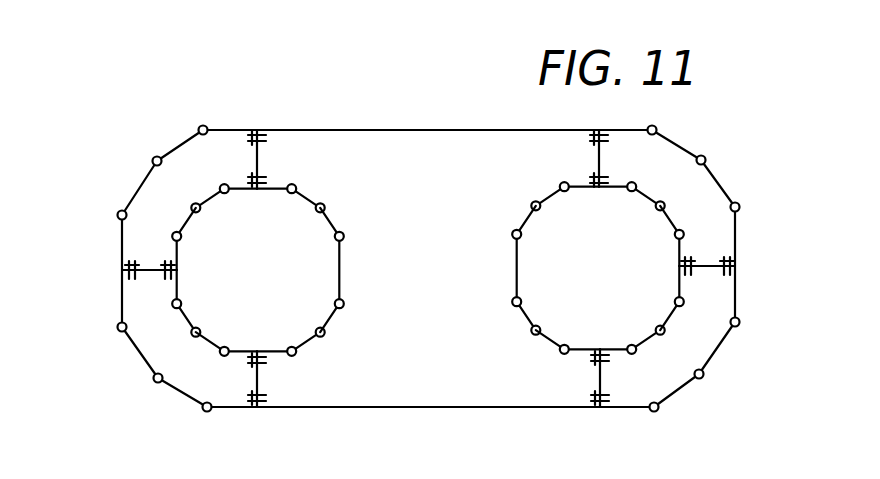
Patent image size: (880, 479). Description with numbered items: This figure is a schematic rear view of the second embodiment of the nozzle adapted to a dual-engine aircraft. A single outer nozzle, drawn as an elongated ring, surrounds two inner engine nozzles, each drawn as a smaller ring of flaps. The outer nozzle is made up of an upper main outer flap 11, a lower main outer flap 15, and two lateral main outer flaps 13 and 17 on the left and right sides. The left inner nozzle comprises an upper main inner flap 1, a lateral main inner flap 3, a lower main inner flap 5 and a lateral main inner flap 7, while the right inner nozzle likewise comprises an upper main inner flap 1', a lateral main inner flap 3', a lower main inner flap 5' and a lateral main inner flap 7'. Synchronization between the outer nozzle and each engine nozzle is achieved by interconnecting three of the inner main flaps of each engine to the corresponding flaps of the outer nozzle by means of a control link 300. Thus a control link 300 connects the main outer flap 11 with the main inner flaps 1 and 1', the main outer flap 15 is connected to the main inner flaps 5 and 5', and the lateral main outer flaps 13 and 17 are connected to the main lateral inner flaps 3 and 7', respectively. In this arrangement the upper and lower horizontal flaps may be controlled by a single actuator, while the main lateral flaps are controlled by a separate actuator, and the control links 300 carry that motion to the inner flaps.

The main inner flap 1 is at (257, 210).
The main inner flap 1' is at (597, 210).
The main lateral inner flap 3 is at (204, 272).
The main lateral inner flap 3' is at (542, 270).
The main inner flap 5 is at (260, 321).
The main inner flap 5' is at (600, 321).
The main lateral inner flap 7 is at (312, 270).
The main lateral inner flap 7' is at (651, 268).
The main outer flap 11 is at (408, 130).
The lateral main outer flap 13 is at (121, 302).
The main outer flap 15 is at (455, 407).
The lateral main outer flap 17 is at (738, 285).
The control link 300 is at (257, 158).